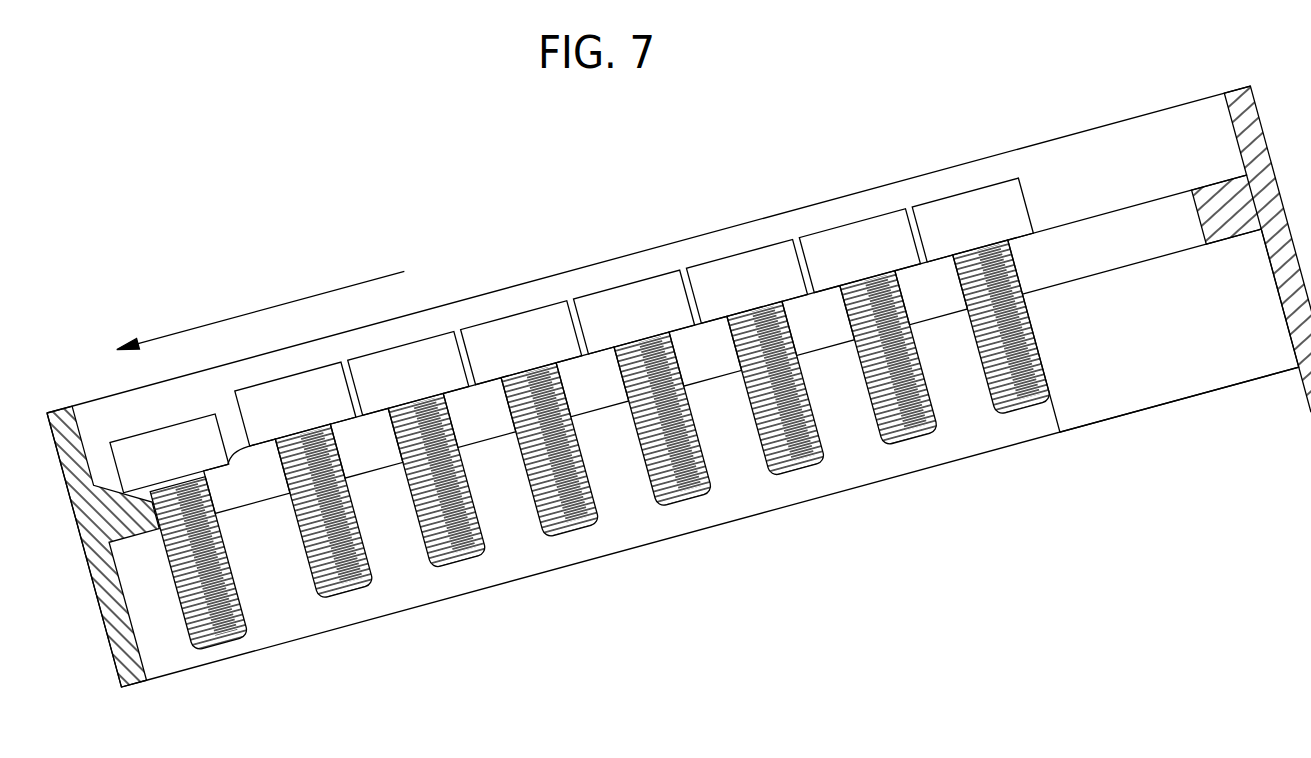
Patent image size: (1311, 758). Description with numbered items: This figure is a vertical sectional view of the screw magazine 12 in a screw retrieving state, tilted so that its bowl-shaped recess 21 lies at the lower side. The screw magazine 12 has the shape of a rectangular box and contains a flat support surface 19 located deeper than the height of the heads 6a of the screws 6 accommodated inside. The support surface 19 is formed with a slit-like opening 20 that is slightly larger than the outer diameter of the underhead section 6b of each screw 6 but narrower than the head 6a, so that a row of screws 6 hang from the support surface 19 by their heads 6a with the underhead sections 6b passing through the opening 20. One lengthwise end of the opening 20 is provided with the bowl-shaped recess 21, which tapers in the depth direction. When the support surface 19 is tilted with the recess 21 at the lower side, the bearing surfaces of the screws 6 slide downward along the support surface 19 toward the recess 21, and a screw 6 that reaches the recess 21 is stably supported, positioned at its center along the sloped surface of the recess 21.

The screw 6 is at (580, 376).
The head 6a is at (828, 231).
The underhead section 6b is at (875, 432).
The screw magazine 12 is at (495, 231).
The support surface 19 is at (598, 348).
The opening 20 is at (1190, 215).
The recess 21 is at (108, 486).